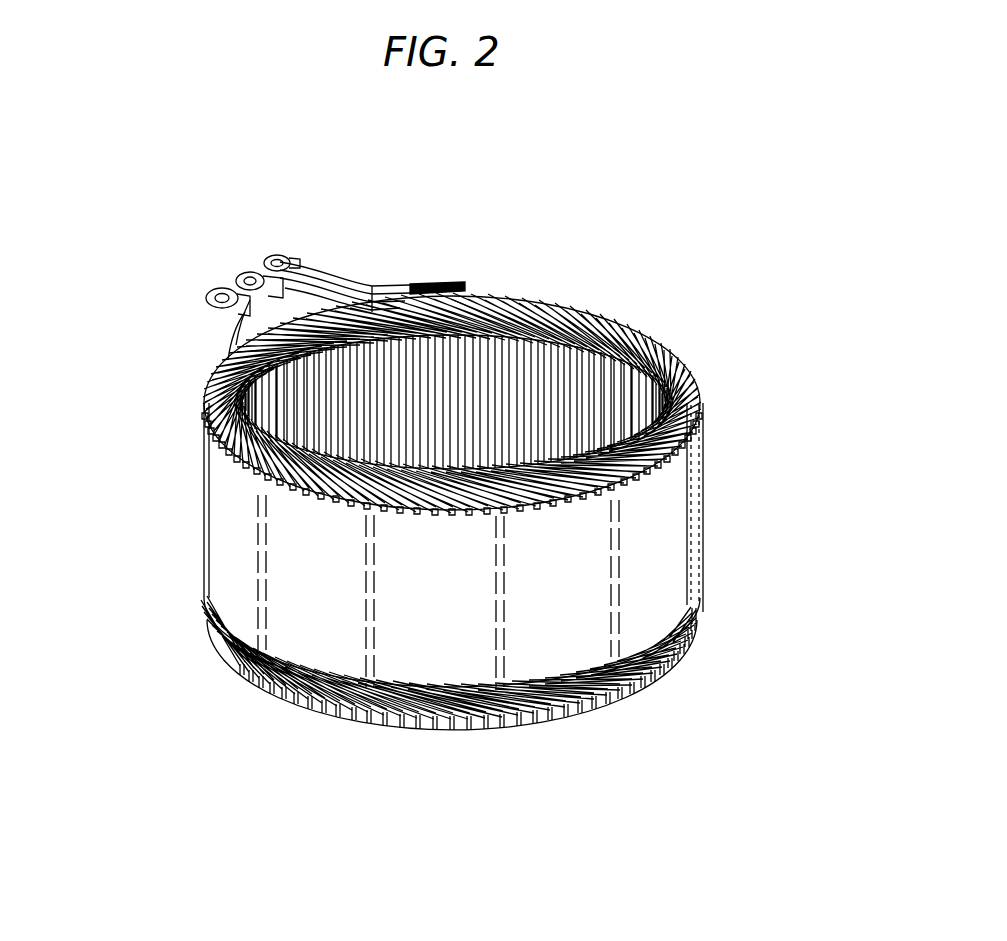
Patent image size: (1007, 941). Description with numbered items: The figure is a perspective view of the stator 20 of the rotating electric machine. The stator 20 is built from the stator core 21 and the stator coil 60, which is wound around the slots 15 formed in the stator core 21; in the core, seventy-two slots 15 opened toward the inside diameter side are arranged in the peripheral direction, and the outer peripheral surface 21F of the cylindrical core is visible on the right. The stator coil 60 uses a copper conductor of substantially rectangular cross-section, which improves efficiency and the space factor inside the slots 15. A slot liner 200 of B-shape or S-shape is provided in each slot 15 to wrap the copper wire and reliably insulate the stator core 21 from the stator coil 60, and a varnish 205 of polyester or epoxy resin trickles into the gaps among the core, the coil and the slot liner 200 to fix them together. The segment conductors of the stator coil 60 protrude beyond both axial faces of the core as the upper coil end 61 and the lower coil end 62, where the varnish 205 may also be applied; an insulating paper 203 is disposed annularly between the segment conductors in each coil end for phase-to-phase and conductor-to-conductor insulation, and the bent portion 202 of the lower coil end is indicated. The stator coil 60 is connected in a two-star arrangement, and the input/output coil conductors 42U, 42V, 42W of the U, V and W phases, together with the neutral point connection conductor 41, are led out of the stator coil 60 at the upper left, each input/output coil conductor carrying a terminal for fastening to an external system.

The stator 20 is at (146, 707).
The stator core 21 is at (693, 522).
The outer peripheral surface of stator core 21F is at (693, 417).
The slot liner 200 is at (567, 320).
The stator coil 60 is at (240, 463).
The neutral point connection conductor 41 is at (465, 285).
The varnish 205 is at (520, 307).
The coil end 61 is at (680, 363).
The coil end 62 is at (657, 678).
The coil end bent portion 202 is at (597, 715).
The insulating paper 203 is at (497, 735).
The slot 15 is at (408, 287).
The input/output coil conductor 42U is at (207, 305).
The input/output coil conductor 42V is at (237, 280).
The input/output coil conductor 42W is at (283, 258).